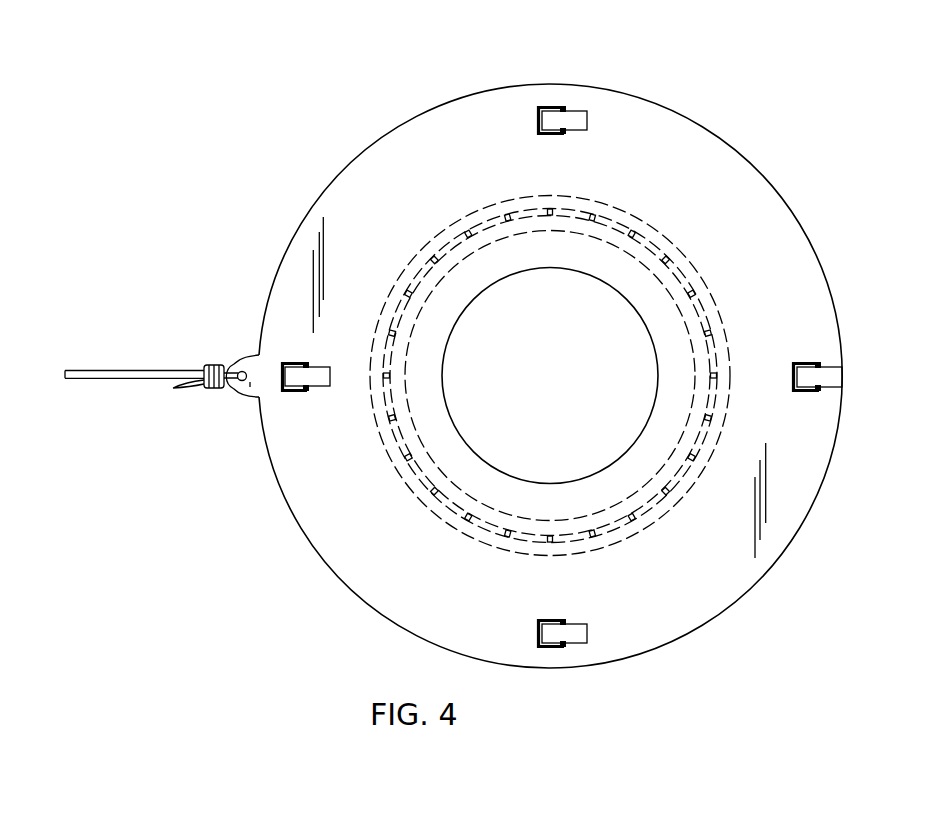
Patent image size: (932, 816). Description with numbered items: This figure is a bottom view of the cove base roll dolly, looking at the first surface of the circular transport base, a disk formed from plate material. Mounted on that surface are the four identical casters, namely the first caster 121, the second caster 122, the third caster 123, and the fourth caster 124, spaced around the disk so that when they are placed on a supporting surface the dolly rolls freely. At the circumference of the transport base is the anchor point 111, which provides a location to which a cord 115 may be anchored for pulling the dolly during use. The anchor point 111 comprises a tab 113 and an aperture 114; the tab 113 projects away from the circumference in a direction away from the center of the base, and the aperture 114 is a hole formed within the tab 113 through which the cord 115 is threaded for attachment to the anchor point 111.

The anchor point 111 is at (234, 392).
The tab 113 is at (237, 357).
The aperture 114 is at (250, 392).
The cord 115 is at (100, 370).
The first caster 121 is at (587, 642).
The second caster 122 is at (831, 387).
The third caster 123 is at (586, 112).
The fourth caster 124 is at (327, 364).